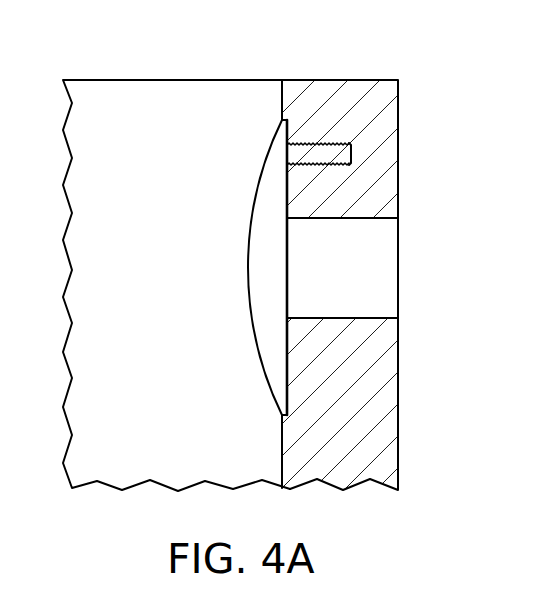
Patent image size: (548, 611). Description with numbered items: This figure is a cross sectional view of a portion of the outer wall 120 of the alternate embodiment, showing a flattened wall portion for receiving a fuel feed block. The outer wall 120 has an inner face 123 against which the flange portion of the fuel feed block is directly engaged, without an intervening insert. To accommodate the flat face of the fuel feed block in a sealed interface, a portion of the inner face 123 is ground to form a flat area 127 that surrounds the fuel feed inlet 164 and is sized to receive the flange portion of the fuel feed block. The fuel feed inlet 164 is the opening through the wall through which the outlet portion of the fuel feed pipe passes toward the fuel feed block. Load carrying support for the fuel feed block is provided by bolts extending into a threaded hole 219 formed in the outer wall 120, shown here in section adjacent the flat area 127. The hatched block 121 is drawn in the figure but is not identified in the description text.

The outer wall 120 is at (122, 100).
The mounting block 121 is at (398, 432).
The inner face 123 is at (282, 424).
The flat area 127 is at (232, 289).
The fuel feed inlet 164 is at (377, 318).
The threaded hole 219 is at (332, 145).